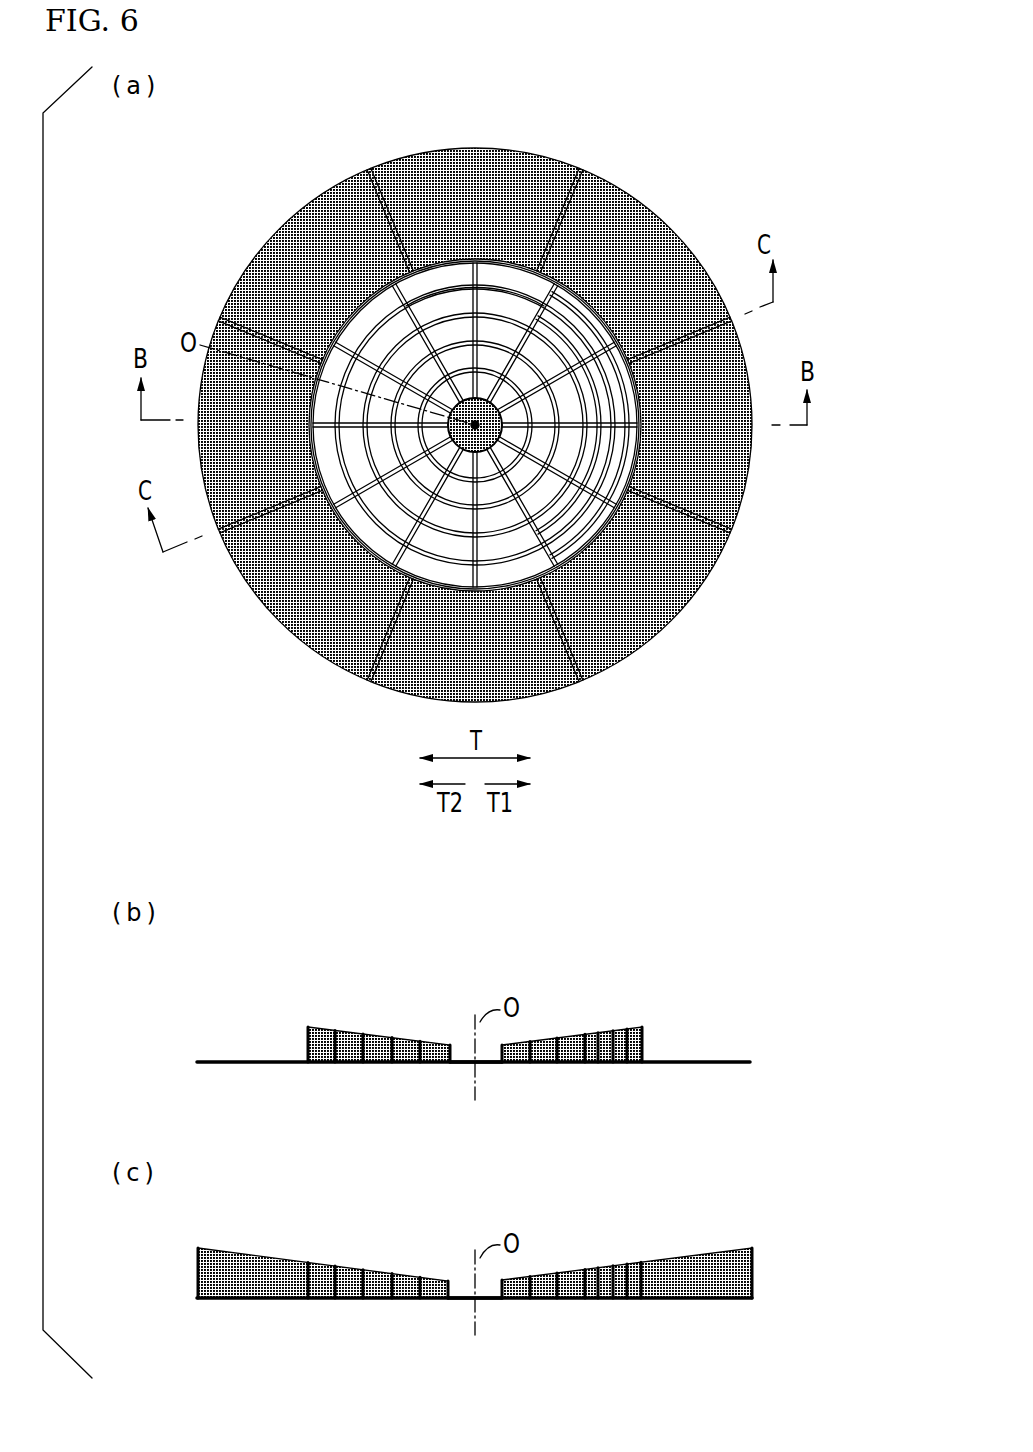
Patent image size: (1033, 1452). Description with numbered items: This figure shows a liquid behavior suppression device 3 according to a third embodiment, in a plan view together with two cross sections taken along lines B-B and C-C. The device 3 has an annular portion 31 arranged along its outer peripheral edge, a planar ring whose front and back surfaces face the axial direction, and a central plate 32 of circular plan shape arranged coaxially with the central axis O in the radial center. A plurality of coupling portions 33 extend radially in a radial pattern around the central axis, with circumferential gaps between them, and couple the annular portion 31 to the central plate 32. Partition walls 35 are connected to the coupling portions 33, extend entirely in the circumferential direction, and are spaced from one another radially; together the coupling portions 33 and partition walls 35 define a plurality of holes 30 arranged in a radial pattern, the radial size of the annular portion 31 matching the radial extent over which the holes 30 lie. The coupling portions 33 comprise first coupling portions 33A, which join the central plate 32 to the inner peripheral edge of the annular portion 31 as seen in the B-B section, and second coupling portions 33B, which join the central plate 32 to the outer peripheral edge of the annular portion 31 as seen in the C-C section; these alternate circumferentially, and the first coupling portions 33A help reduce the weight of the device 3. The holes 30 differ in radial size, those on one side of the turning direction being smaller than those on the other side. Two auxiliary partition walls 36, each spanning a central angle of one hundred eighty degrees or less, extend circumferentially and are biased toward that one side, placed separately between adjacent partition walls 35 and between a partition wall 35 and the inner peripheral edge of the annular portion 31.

The liquid behavior suppression device 3 is at (745, 198).
The holes 30 is at (510, 272).
The annular portion 31 is at (607, 200).
The central plate 32 is at (452, 442).
The coupling portion 33 is at (538, 822).
The first coupling portion 33A is at (547, 492).
The second coupling portion 33B is at (586, 440).
The partition wall 35 is at (540, 535).
The auxiliary partition wall 36 is at (576, 512).